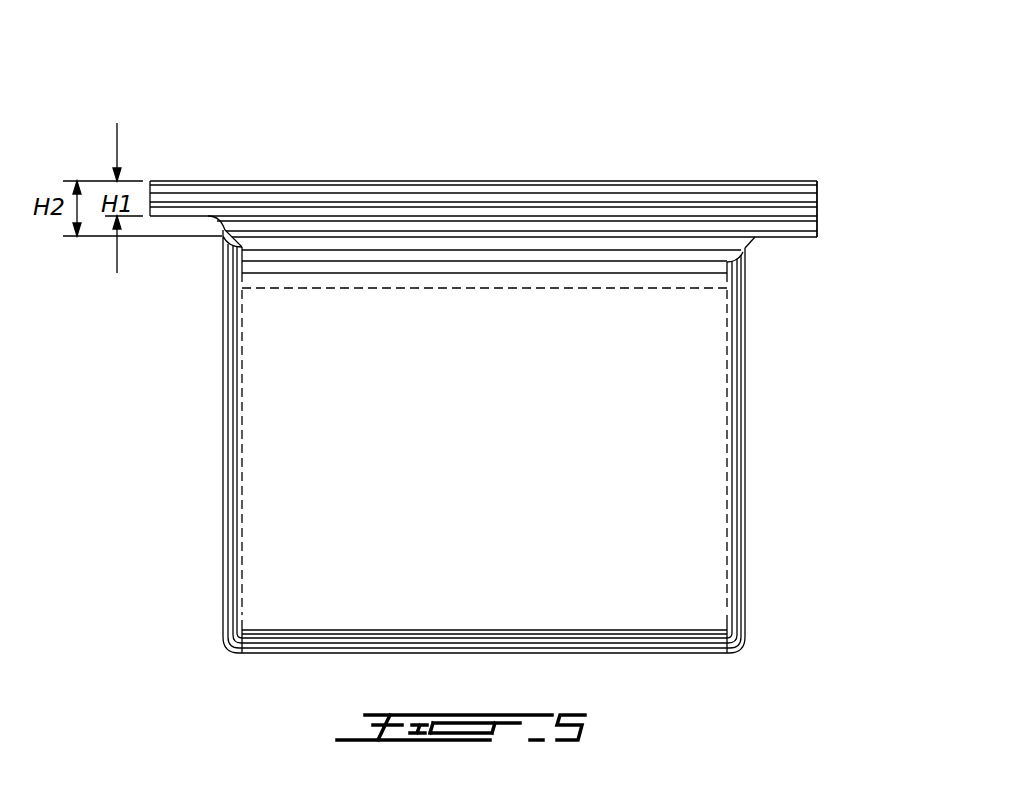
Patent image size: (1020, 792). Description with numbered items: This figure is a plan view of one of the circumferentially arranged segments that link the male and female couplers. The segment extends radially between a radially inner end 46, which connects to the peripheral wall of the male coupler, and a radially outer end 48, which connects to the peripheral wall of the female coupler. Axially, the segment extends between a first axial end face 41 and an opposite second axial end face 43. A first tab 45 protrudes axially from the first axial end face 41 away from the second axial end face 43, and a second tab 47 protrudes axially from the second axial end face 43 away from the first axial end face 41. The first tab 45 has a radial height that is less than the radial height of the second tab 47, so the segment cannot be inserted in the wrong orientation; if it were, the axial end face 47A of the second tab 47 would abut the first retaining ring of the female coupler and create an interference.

The first axial end face 41 is at (222, 432).
The second axial end face 43 is at (745, 441).
The first tab 45 is at (172, 203).
The radially inner end 46 is at (665, 647).
The second tab 47 is at (790, 210).
The axial end face of the second tab 47A is at (817, 211).
The radially outer end 48 is at (493, 181).